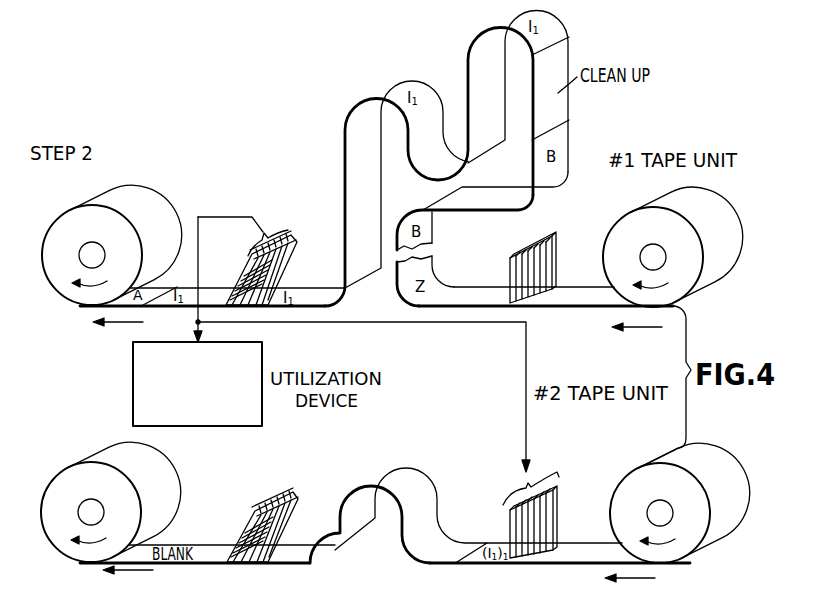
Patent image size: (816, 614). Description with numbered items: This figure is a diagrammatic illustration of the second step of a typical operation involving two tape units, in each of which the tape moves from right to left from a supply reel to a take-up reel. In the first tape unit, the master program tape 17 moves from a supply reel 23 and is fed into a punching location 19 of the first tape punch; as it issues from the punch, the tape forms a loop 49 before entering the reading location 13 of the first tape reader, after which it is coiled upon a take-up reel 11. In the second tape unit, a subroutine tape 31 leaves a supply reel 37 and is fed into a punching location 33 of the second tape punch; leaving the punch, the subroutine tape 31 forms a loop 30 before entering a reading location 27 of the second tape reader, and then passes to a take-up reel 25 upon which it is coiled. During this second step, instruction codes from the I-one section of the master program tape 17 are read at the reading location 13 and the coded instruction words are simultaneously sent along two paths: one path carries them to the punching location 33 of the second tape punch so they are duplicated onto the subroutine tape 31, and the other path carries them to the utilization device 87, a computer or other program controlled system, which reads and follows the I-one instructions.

The take-up reel 11 is at (55, 243).
The reading location 13 is at (290, 255).
The master program tape 17 is at (343, 160).
The punching location 19 is at (553, 247).
The supply reel 23 is at (725, 210).
The take-up reel 25 is at (62, 487).
The reading location 27 is at (270, 502).
The loop 30 is at (382, 557).
The subroutine tape 31 is at (420, 483).
The punching location 33 is at (553, 502).
The supply reel 37 is at (710, 457).
The loop 49 is at (405, 202).
The utilization device 87 is at (200, 426).